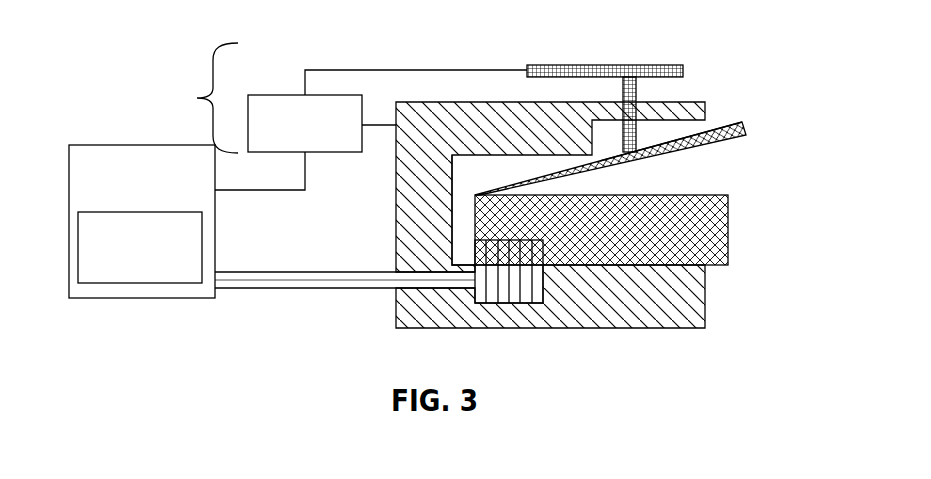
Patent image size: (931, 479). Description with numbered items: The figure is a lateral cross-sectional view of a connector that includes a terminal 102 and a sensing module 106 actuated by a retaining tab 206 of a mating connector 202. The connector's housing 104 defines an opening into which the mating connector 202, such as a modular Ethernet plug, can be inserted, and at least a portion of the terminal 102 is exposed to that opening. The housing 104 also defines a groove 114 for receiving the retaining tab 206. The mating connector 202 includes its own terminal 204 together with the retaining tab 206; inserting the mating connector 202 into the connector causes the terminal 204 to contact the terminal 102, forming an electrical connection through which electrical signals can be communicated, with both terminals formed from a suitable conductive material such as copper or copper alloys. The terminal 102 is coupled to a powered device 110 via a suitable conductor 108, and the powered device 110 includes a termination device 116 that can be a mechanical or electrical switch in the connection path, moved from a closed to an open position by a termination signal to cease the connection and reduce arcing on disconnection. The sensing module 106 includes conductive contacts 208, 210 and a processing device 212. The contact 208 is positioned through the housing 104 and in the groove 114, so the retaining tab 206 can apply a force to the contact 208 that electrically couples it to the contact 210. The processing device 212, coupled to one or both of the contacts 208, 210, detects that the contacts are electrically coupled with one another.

The terminal 102 is at (490, 308).
The housing 104 is at (503, 146).
The sensing module 106 is at (339, 116).
The conductor 108 is at (332, 266).
The powered device 110 is at (188, 200).
The groove 114 is at (693, 126).
The termination device 116 is at (187, 268).
The mating connector 202 is at (737, 217).
The terminal 204 is at (461, 246).
The retaining tab 206 is at (755, 130).
The contact 208 is at (615, 89).
The contact 210 is at (578, 56).
The processing device 212 is at (352, 146).